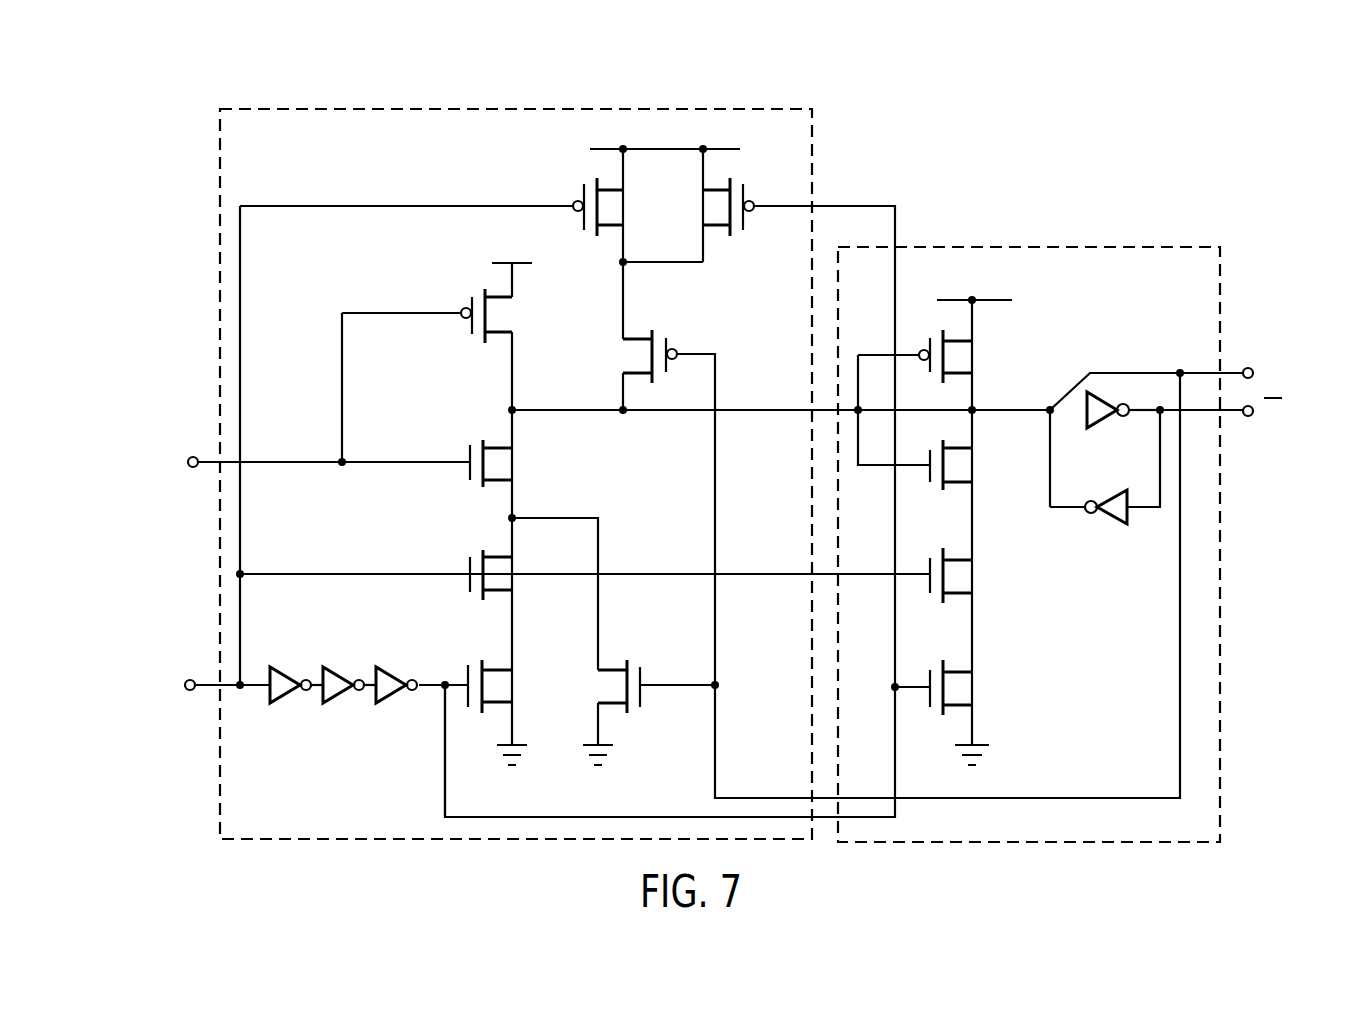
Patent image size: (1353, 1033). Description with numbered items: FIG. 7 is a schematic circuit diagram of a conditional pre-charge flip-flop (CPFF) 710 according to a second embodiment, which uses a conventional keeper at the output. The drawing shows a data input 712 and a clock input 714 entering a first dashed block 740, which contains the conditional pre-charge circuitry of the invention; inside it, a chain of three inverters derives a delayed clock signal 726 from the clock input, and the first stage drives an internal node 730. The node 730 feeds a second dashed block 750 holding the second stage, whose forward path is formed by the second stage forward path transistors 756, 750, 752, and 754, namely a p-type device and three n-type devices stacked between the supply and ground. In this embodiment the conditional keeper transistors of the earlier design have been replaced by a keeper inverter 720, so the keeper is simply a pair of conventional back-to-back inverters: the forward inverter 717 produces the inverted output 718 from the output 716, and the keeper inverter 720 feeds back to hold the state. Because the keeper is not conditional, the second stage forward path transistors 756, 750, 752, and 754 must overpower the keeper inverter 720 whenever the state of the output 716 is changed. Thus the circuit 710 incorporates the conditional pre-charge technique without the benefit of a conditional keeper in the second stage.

The flip-flop circuit 710 is at (1152, 96).
The data input D 712 is at (170, 445).
The clock input CLK0 714 is at (147, 667).
The output Q 716 is at (1273, 357).
The inverted output Q-bar 718 is at (1292, 415).
The inverter inv4 717 is at (1108, 462).
The inverter inv5 720 is at (1110, 563).
The clock signal CLK3 line 726 is at (597, 797).
The node X 730 is at (762, 382).
The master stage block 740 is at (428, 108).
The transistor Mn5 750 is at (1068, 246).
The transistor Mn6 752 is at (1000, 572).
The transistor Mn7 754 is at (1000, 465).
The transistor Mp5 756 is at (1000, 362).